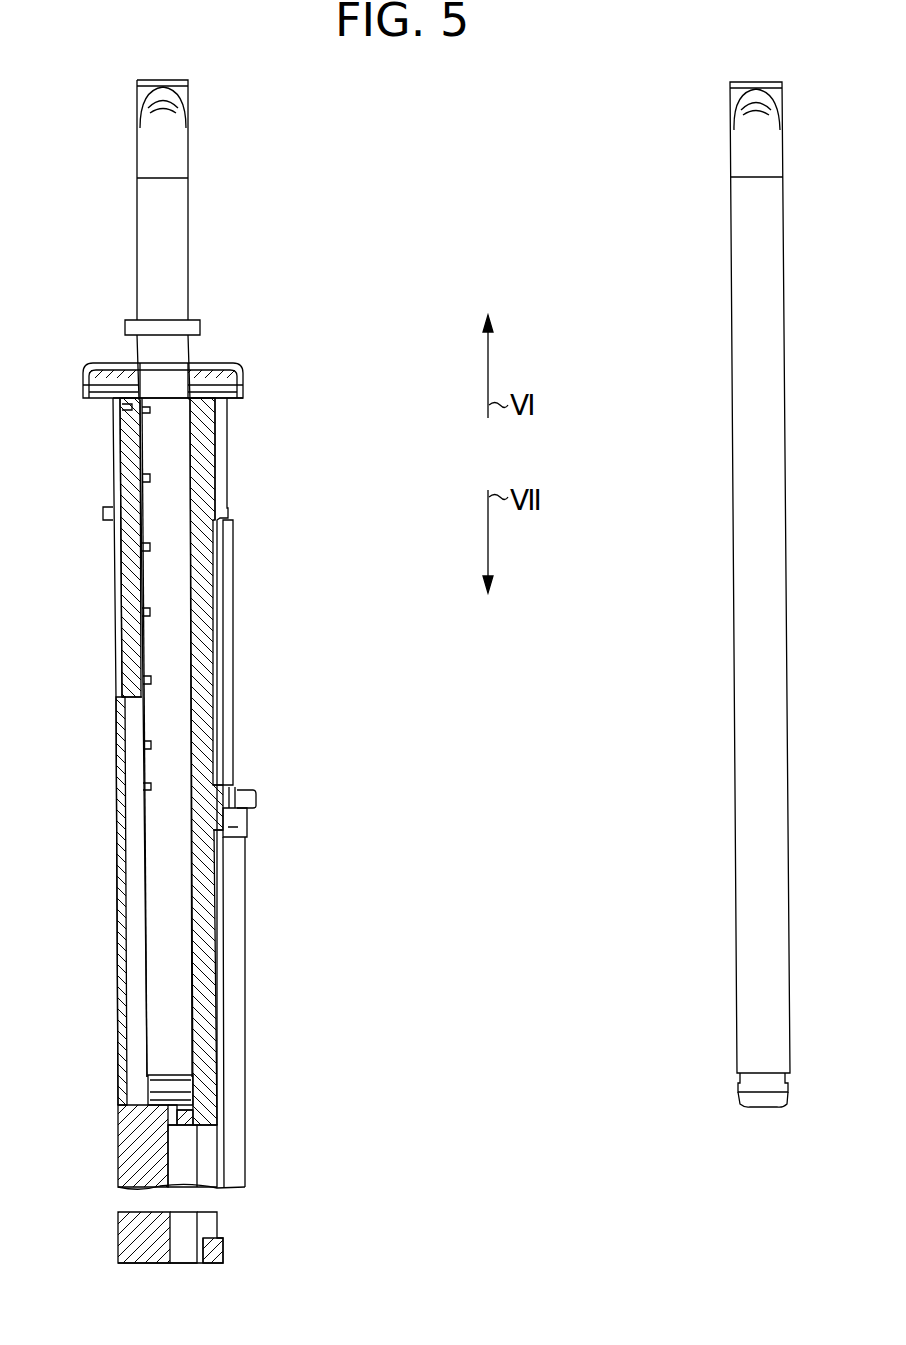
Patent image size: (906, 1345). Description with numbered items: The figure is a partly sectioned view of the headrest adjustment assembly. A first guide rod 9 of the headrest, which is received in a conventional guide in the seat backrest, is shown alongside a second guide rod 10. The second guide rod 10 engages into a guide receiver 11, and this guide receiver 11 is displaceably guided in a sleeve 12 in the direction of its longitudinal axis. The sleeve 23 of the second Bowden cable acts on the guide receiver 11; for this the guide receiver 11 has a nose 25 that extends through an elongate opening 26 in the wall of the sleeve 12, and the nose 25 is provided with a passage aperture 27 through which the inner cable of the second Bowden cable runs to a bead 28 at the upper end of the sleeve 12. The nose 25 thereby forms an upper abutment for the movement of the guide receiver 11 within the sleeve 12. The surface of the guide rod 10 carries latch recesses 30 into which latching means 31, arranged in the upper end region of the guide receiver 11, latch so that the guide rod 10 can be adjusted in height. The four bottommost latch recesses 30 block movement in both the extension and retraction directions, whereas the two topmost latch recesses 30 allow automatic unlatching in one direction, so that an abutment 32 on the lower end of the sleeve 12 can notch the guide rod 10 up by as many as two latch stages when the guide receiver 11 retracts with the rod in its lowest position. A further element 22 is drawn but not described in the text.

The first guide rod 9 is at (762, 238).
The second guide rod 10 is at (170, 242).
The guide receiver 11 is at (195, 918).
The sleeve 12 is at (118, 938).
The sleeve 22 is at (230, 600).
The sleeve of the second Bowden cable 23 is at (233, 1035).
The nose 25 is at (248, 812).
The elongate opening 26 is at (205, 1148).
The passage aperture 27 is at (245, 790).
The bead 28 is at (238, 372).
The latch recesses 30 is at (142, 412).
The latching means 31 is at (140, 410).
The abutment 32 is at (130, 1150).